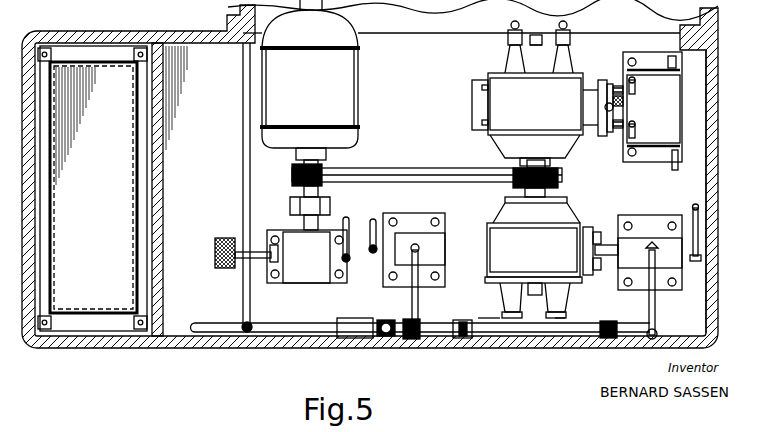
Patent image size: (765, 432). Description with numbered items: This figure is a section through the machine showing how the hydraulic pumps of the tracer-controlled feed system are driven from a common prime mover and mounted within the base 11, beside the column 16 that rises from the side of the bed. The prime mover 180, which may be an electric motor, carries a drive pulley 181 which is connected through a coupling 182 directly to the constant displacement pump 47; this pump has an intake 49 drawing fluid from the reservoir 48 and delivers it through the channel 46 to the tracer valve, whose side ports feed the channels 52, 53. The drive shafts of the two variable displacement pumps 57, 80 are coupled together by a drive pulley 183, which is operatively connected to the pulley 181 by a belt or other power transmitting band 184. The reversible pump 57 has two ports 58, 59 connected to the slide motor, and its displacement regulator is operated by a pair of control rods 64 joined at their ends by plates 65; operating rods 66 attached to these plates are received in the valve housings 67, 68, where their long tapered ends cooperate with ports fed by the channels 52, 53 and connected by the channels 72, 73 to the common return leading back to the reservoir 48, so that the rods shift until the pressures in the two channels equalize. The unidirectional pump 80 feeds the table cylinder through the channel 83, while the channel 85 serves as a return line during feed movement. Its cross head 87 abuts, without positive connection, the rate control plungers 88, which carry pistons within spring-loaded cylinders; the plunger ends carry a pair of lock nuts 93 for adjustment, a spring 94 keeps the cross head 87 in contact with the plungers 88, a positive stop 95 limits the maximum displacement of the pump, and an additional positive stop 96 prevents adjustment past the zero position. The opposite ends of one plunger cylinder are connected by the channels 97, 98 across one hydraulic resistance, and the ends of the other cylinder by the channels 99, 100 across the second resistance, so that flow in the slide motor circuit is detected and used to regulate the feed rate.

The base 11 is at (177, 345).
The column 16 is at (719, 14).
The channel 46 is at (340, 225).
The constant displacement pump 47 is at (297, 275).
The reservoir 48 is at (178, 305).
The intake 49 is at (268, 250).
The channel 52 is at (373, 222).
The channel 53 is at (692, 210).
The variable displacement pump 57 is at (557, 240).
The port 58 is at (505, 315).
The port 59 is at (565, 318).
The control rods 64 is at (585, 275).
The plates 65 is at (590, 235).
The operating rods 66 is at (608, 255).
The valve housing 67 is at (410, 235).
The valve housing 68 is at (640, 225).
The channel 72 is at (420, 305).
The channel 73 is at (656, 313).
The variable displacement pump 80 is at (500, 118).
The channel 83 is at (568, 24).
The channel 85 is at (511, 25).
The cross head 87 is at (590, 118).
The rate control plungers 88 is at (608, 133).
The lock nuts 93 is at (615, 88).
The spring 94 is at (616, 120).
The positive stop 95 is at (605, 107).
The positive stop 96 is at (472, 106).
The channel 97 is at (640, 133).
The channel 98 is at (670, 168).
The channel 99 is at (640, 82).
The channel 100 is at (670, 56).
The prime mover 180 is at (334, 88).
The drive pulley 181 is at (322, 165).
The coupling 182 is at (290, 205).
The drive pulley 183 is at (555, 185).
The power transmitting band 184 is at (418, 168).